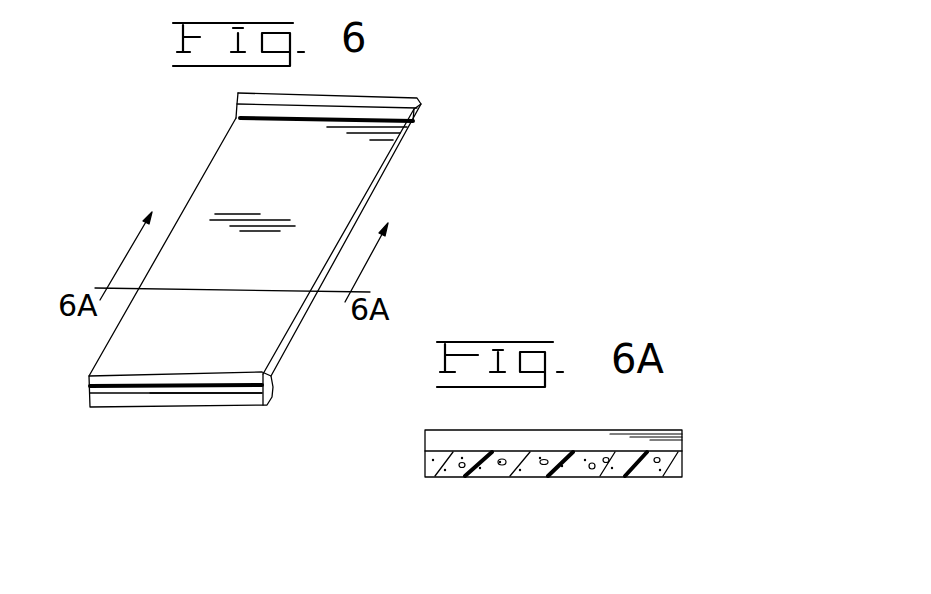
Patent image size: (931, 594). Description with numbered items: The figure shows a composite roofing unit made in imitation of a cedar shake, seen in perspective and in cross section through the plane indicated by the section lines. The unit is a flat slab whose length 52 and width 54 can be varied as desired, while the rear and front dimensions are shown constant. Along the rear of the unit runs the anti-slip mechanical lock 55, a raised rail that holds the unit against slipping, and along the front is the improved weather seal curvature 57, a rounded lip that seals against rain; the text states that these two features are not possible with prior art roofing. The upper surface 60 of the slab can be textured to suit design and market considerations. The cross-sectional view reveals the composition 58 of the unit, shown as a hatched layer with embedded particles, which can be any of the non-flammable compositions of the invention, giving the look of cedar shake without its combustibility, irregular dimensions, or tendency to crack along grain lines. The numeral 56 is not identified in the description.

In FIG. 6, the length 52 is at (290, 340).
In FIG. 6, the width 54 is at (167, 408).
In FIG. 6, the anti-slip mechanical lock 55 is at (422, 101).
In FIG. 6A, the cover layer 56 is at (683, 465).
In FIG. 6, the weather seal curvature 57 is at (239, 393).
In FIG. 6A, the composition 58 is at (573, 476).
In FIG. 6, the surface 60 is at (233, 187).